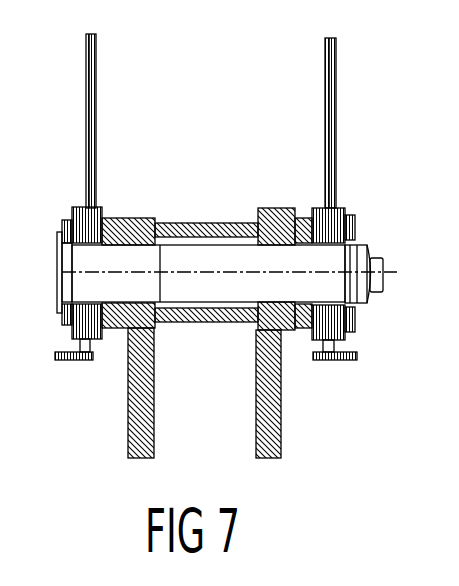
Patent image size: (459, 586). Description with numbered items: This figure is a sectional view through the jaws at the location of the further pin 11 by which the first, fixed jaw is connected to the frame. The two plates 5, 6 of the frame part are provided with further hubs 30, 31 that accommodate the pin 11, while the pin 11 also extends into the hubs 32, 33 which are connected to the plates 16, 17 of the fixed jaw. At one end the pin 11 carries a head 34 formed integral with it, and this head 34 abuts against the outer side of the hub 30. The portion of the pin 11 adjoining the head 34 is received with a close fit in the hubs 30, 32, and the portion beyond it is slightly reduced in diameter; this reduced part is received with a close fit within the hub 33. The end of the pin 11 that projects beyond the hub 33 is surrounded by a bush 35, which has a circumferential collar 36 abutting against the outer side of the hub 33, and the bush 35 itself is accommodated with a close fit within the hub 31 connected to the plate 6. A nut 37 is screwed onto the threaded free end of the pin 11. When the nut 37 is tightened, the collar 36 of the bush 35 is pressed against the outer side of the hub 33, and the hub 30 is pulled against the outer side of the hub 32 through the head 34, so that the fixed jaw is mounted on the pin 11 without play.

The plate 5 is at (88, 71).
The plate 6 is at (335, 73).
The pin 11 is at (196, 262).
The plate 16 is at (138, 432).
The plate 17 is at (268, 438).
The hub 30 is at (97, 207).
The hub 31 is at (336, 210).
The hub 32 is at (120, 218).
The hub 33 is at (278, 222).
The head 34 is at (66, 259).
The bush 35 is at (357, 232).
The circumferential collar 36 is at (303, 330).
The nut 37 is at (362, 307).